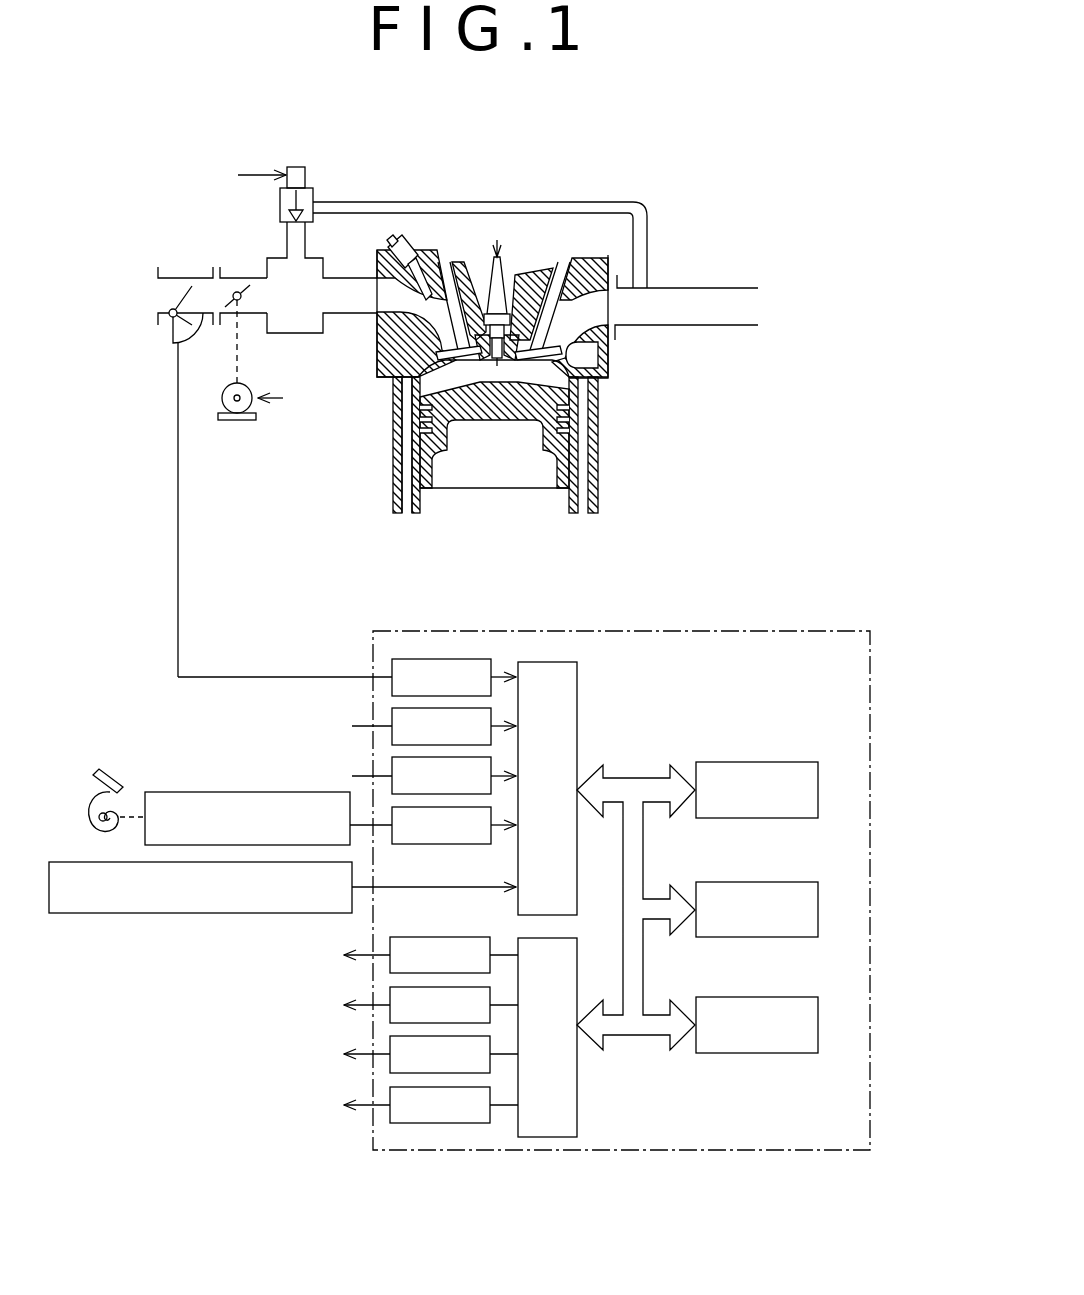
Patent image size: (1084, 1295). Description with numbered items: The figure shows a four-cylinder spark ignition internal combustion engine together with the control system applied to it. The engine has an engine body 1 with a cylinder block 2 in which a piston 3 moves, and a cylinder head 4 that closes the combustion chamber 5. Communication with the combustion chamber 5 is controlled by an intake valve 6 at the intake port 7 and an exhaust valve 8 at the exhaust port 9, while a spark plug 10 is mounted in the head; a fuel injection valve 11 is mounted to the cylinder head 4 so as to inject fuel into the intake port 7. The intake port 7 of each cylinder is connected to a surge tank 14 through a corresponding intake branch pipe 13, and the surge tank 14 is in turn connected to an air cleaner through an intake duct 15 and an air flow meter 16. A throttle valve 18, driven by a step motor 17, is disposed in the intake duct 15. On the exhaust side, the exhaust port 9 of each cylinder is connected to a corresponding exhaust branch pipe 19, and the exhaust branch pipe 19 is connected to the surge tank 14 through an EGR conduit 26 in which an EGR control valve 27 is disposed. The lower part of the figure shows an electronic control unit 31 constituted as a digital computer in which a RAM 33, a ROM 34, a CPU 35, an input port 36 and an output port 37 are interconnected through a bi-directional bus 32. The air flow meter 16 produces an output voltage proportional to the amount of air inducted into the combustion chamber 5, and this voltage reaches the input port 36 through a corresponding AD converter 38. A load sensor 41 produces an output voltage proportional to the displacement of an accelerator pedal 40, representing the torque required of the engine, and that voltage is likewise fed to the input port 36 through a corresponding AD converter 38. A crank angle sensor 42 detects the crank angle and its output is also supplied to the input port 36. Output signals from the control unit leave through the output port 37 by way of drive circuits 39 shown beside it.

The engine body 1 is at (391, 479).
The cylinder block 2 is at (592, 447).
The piston 3 is at (437, 452).
The cylinder head 4 is at (595, 292).
The combustion chamber 5 is at (572, 389).
The intake valve 6 is at (440, 265).
The intake port 7 is at (405, 313).
The exhaust valve 8 is at (557, 272).
The exhaust port 9 is at (595, 308).
The spark plug 10 is at (503, 300).
The fuel injection valve 11 is at (416, 250).
The intake branch pipe 13 is at (350, 293).
The surge tank 14 is at (300, 323).
The intake duct 15 is at (240, 278).
The air flow meter 16 is at (182, 277).
The step motor 17 is at (238, 420).
The throttle valve 18 is at (248, 290).
The exhaust branch pipe 19 is at (686, 288).
The EGR conduit 26 is at (502, 200).
The EGR control valve 27 is at (280, 200).
The electronic control unit 31 is at (871, 682).
The bi-directional bus 32 is at (637, 778).
The RAM 33 is at (770, 762).
The ROM 34 is at (770, 882).
The CPU 35 is at (770, 997).
The input port 36 is at (577, 675).
The output port 37 is at (577, 1095).
The AD converter 38 is at (392, 805).
The drive circuits 39 is at (390, 1095).
The accelerator pedal 40 is at (105, 770).
The load sensor 41 is at (228, 792).
The crank angle sensor 42 is at (175, 913).